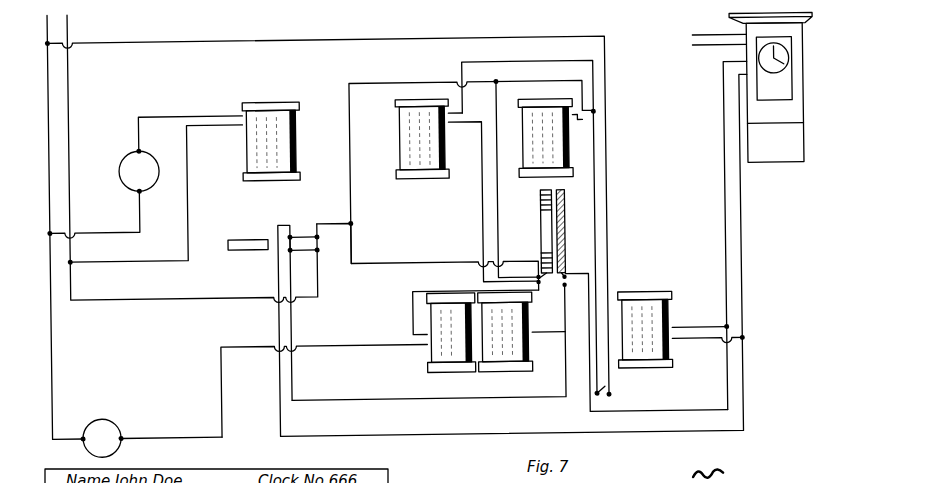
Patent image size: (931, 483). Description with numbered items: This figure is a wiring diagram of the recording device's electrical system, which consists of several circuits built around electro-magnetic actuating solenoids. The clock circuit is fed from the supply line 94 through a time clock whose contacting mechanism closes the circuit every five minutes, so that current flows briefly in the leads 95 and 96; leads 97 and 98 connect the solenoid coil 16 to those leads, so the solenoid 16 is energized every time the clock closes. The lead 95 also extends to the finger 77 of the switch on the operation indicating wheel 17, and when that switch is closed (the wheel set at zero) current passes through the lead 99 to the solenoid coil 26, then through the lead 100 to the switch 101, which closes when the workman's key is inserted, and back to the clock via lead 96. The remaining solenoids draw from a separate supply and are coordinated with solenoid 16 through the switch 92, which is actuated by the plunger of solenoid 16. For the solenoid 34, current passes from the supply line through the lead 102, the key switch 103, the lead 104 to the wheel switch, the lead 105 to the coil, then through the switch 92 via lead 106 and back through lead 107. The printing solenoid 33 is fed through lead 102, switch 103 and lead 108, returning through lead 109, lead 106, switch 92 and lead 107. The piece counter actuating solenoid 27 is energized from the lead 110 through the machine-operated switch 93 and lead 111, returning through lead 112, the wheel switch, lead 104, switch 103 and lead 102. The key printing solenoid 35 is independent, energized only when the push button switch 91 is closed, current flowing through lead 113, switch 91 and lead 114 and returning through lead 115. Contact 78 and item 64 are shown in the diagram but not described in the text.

The lead 107 is at (350, 38).
The lead 106 is at (547, 59).
The lead 109 is at (582, 112).
The supply line for the clock circuit 94 is at (700, 48).
The lead 114 is at (165, 113).
The push button switch 91 is at (121, 164).
The key printing solenoid 35 is at (244, 150).
The lead 108 is at (350, 145).
The solenoid 34 is at (400, 153).
The printing solenoid 33 is at (525, 181).
The lead 113 is at (128, 228).
The lead 115 is at (188, 211).
The switch 101 is at (286, 234).
The lead 104 is at (380, 261).
The lead 105 is at (482, 193).
The operation indicating printing wheel 17 is at (541, 226).
The finger 77 is at (567, 246).
The lead 95 is at (725, 215).
The lead 96 is at (388, 434).
The lead 102 is at (92, 295).
The key switch 103 is at (318, 248).
The lead 112 is at (445, 291).
The piece counter actuating solenoid 27 is at (437, 318).
The lead 99 is at (540, 285).
The contact 78 is at (565, 287).
The solenoid 16 is at (648, 303).
The lead 98 is at (690, 330).
The lead 110 is at (50, 360).
The switch 93 is at (103, 415).
The lead 111 is at (220, 362).
The solenoid 26 is at (520, 339).
The lead 97 is at (695, 342).
The lead 100 is at (484, 397).
The switch 92 is at (609, 399).
The record card 64 is at (681, 476).